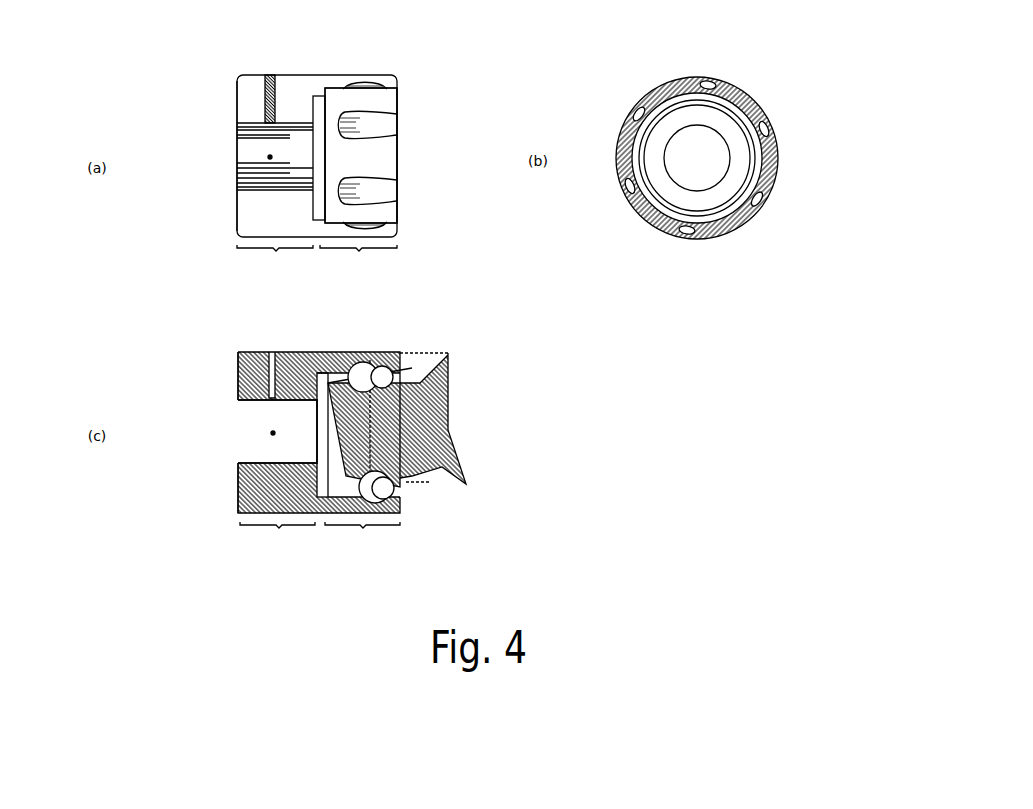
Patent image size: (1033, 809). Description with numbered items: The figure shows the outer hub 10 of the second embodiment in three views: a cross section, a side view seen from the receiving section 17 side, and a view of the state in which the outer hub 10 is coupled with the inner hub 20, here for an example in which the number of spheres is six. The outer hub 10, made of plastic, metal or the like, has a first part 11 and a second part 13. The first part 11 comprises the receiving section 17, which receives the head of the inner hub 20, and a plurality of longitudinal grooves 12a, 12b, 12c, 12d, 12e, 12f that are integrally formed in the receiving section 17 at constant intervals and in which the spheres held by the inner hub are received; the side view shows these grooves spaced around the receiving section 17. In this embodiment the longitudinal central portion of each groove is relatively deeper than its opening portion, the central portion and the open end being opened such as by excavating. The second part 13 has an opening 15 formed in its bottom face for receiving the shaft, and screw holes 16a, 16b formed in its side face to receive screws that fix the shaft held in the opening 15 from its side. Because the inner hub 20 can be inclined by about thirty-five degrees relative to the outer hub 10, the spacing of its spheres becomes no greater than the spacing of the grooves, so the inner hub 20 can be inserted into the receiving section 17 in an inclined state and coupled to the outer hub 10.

The outer hub 10 is at (355, 66).
The first part 11 is at (324, 320).
The longitudinal groove 12a is at (397, 85).
The longitudinal groove 12b is at (392, 122).
The longitudinal groove 12c is at (392, 187).
The longitudinal groove 12d is at (397, 224).
The longitudinal groove 12e is at (625, 188).
The longitudinal groove 12f is at (637, 112).
The second part 13 is at (262, 316).
The opening 15 is at (243, 186).
The screw hole 16a is at (270, 75).
The screw hole 16b is at (268, 157).
The receiving section 17 is at (392, 151).
The inner hub 20 is at (429, 482).